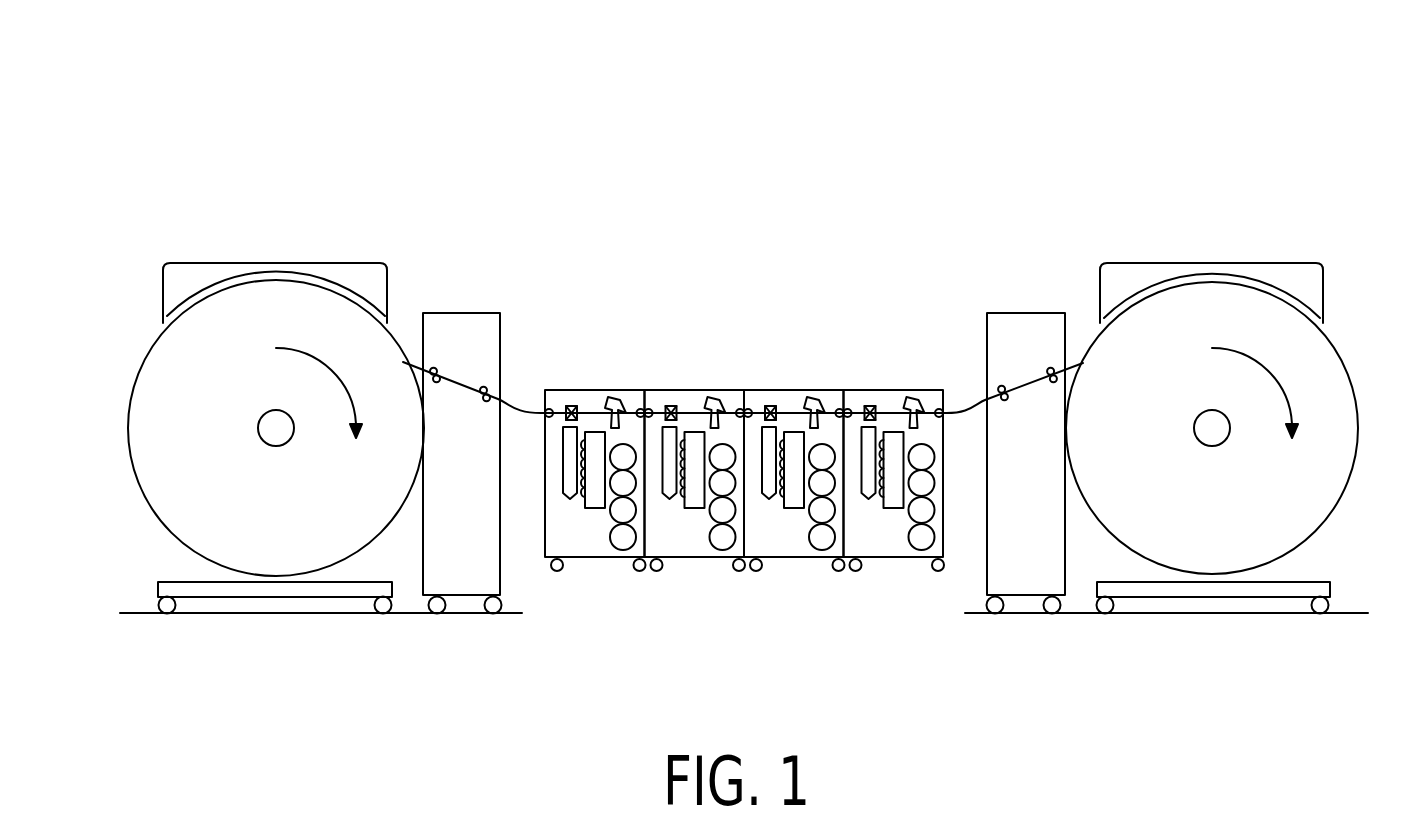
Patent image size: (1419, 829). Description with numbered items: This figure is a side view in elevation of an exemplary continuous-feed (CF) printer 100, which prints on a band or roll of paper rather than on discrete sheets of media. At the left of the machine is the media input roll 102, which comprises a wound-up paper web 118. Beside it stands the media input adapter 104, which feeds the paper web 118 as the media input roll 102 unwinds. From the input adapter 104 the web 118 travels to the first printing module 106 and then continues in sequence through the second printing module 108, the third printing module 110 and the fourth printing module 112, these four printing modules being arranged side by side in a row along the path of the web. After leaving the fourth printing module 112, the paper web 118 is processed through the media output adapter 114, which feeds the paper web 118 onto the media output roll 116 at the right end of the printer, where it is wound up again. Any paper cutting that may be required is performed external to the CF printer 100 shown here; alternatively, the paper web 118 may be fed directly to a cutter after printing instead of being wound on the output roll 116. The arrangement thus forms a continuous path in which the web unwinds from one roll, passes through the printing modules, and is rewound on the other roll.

The CF printer 100 is at (822, 170).
The media input roll 102 is at (167, 363).
The media input adapter 104 is at (462, 312).
The first printing module 106 is at (595, 560).
The second printing module 108 is at (695, 560).
The third printing module 110 is at (790, 560).
The fourth printing module 112 is at (892, 560).
The media output adapter 114 is at (1025, 312).
The media output roll 116 is at (1327, 353).
The paper web 118 is at (527, 397).